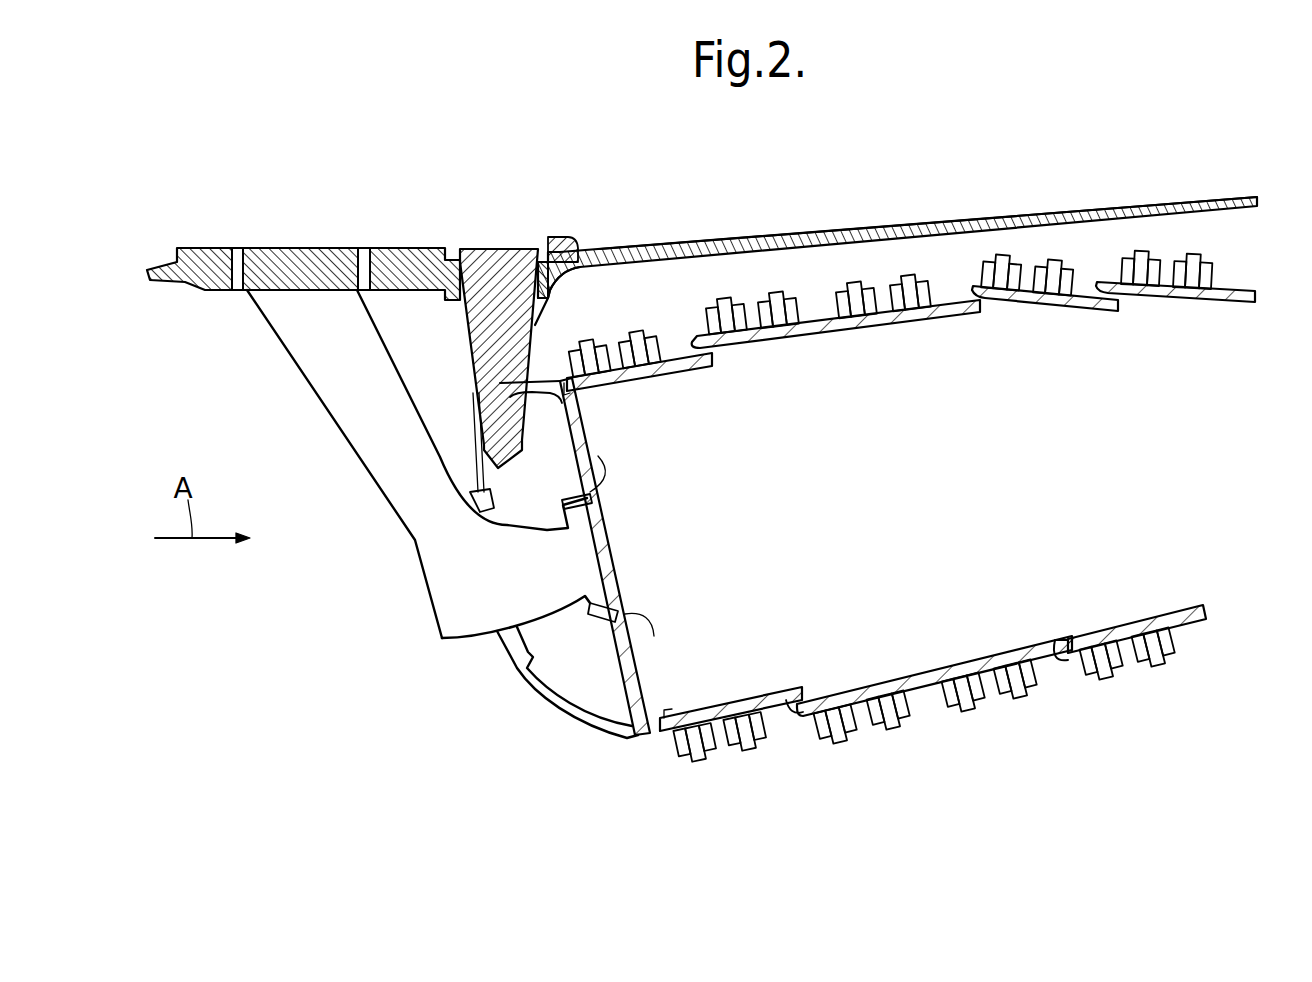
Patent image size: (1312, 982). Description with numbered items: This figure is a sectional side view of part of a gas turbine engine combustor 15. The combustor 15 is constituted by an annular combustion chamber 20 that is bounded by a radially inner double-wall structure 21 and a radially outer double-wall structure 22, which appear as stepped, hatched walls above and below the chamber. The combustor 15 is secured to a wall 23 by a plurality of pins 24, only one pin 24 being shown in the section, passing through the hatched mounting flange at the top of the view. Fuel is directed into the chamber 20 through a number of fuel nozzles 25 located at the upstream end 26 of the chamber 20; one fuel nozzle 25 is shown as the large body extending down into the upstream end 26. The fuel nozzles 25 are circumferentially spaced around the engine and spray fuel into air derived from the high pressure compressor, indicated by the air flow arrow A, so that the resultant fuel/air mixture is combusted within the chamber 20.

The combustor 15 is at (856, 213).
The annular combustion chamber 20 is at (671, 654).
The radially inner double-wall structure 21 is at (918, 690).
The radially outer double-wall structure 22 is at (948, 298).
The wall 23 is at (686, 242).
The pin 24 is at (493, 318).
The fuel nozzle 25 is at (458, 577).
The upstream end 26 is at (517, 648).